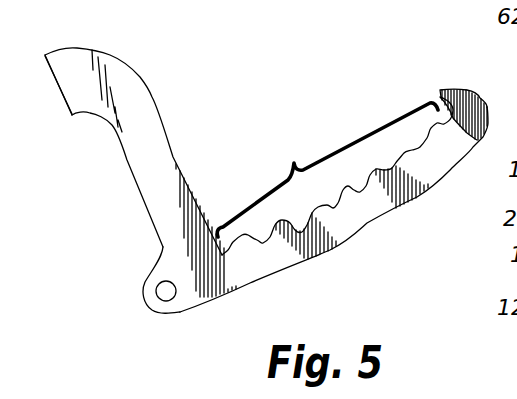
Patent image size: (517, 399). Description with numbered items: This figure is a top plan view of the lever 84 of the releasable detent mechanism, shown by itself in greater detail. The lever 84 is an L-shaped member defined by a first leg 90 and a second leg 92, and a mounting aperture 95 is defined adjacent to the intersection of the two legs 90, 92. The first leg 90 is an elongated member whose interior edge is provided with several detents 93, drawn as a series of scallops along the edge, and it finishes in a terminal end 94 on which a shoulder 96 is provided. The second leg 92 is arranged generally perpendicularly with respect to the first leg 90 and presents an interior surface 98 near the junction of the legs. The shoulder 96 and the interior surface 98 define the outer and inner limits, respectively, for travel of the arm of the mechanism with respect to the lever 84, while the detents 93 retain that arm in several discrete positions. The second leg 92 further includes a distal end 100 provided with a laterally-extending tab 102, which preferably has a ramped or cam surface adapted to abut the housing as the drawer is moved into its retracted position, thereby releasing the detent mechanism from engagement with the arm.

The lever 84 is at (247, 127).
The first leg 90 is at (367, 221).
The second leg 92 is at (147, 207).
The detents 93 is at (327, 170).
The terminal end 94 is at (473, 95).
The mounting aperture 95 is at (166, 292).
The shoulder 96 is at (440, 102).
The interior surface 98 is at (203, 220).
The distal end 100 is at (110, 53).
The tab 102 is at (64, 102).